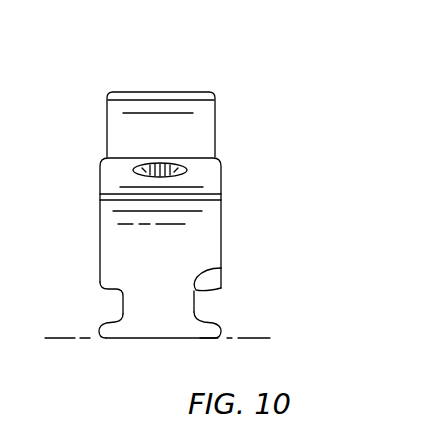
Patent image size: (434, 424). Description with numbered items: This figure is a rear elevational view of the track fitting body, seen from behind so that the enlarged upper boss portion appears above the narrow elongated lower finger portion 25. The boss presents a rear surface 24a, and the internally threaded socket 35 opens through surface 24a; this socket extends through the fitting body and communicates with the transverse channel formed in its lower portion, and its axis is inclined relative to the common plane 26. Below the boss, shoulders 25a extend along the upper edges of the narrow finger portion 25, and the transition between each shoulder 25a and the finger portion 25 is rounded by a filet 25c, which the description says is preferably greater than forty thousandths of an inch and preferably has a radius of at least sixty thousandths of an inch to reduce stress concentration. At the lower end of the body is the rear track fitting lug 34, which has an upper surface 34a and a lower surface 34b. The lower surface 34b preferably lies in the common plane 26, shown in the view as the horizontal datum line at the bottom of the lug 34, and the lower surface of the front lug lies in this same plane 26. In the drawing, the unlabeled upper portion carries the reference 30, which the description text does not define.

The cap 30 is at (192, 99).
The internally threaded socket 35 is at (178, 167).
The surface 24a is at (108, 173).
The shoulders 25a is at (104, 287).
The upper surface 34a is at (110, 323).
The lower surface 34b is at (140, 339).
The filets 25c is at (197, 281).
The finger portion 25 is at (174, 304).
The track fitting lug 34 is at (218, 323).
The common plane 26 is at (262, 338).